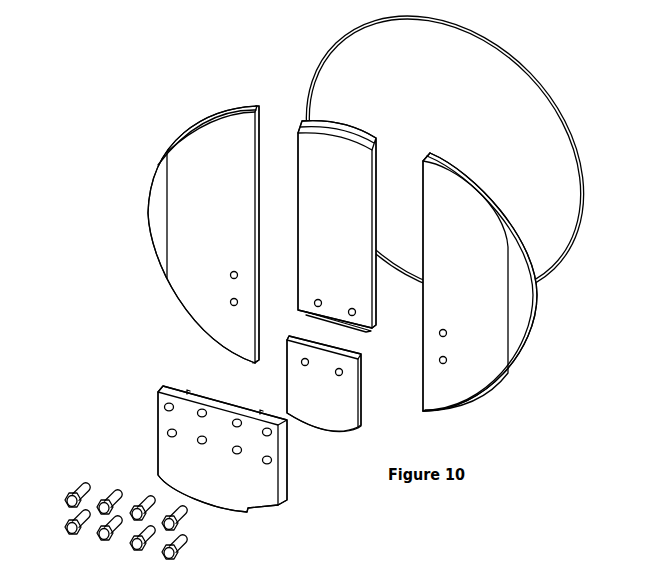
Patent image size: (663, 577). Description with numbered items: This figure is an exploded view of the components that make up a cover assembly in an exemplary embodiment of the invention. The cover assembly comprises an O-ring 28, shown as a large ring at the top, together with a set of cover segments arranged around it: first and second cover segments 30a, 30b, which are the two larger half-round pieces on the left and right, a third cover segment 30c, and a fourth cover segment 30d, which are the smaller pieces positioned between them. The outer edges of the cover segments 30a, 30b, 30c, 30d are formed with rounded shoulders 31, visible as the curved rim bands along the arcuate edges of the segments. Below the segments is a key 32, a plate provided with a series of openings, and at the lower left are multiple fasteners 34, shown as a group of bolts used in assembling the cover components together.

The O-ring 28 is at (534, 78).
The first cover segment 30a is at (185, 300).
The second cover segment 30b is at (518, 317).
The third cover segment 30c is at (357, 197).
The fourth cover segment 30d is at (350, 398).
The rounded shoulders 31 is at (188, 124).
The key 32 is at (275, 472).
The fasteners 34 is at (65, 522).